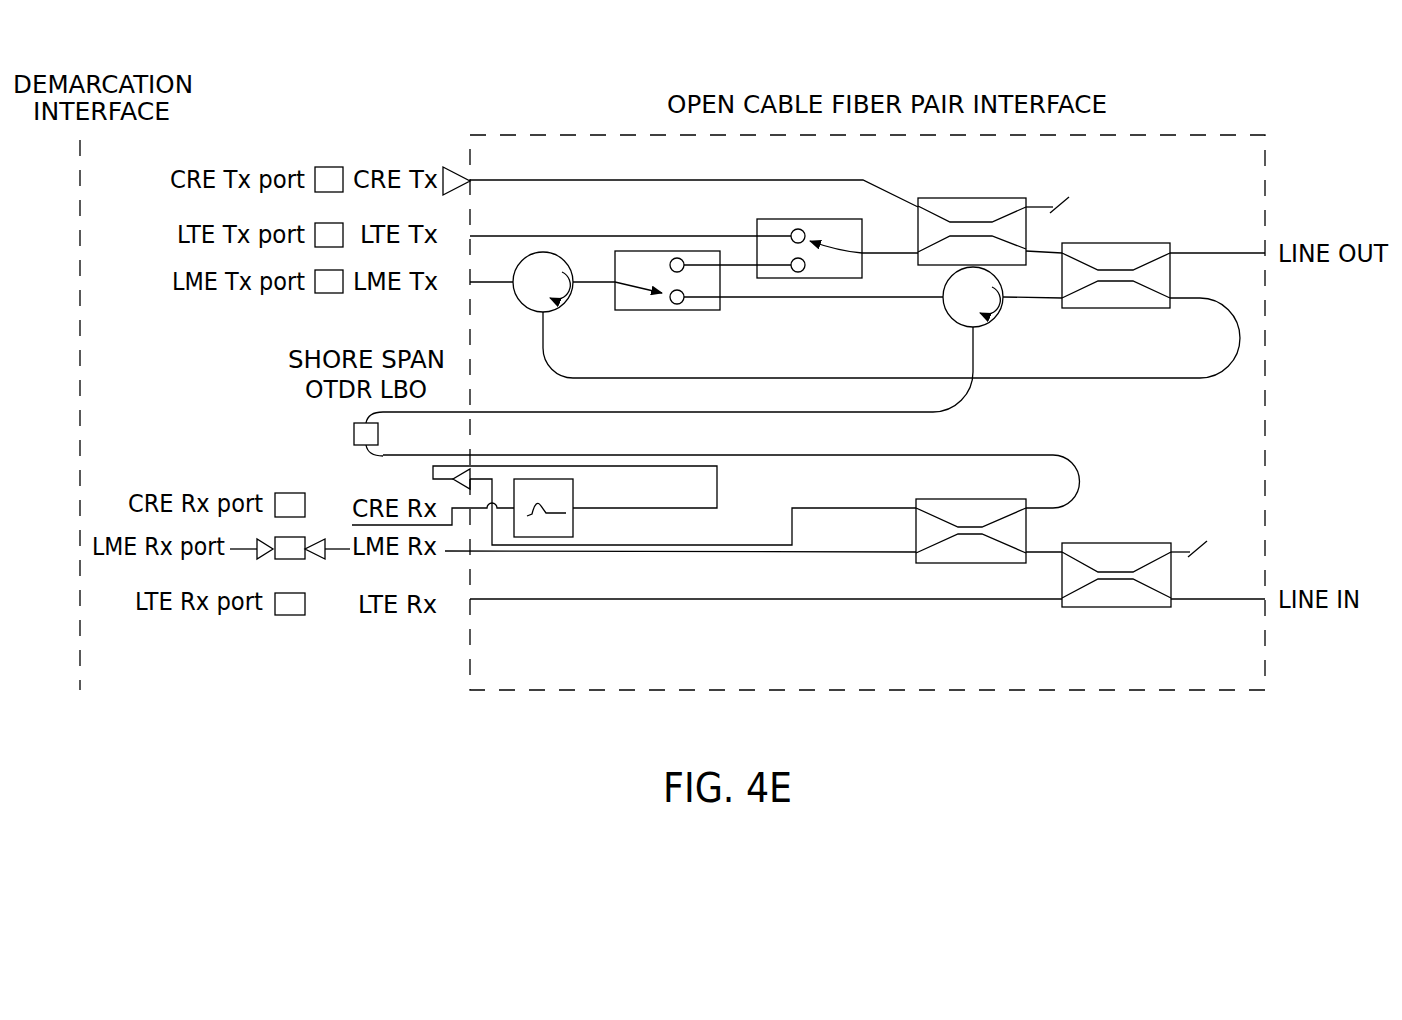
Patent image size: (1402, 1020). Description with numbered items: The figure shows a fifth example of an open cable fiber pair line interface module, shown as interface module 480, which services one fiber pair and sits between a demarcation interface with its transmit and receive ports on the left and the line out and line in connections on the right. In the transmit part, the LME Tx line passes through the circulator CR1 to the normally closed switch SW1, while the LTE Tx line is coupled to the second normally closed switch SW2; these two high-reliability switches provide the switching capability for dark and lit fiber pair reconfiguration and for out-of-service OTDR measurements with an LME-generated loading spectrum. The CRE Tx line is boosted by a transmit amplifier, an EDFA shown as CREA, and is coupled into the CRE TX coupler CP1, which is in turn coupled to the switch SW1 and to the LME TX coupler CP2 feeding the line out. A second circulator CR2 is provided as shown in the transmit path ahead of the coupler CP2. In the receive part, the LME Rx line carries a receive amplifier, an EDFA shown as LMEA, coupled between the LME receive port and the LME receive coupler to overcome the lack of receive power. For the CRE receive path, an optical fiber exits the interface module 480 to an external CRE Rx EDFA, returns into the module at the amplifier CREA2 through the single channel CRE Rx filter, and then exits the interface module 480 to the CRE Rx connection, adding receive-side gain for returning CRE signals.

The interface module 480 is at (907, 742).
The CRE TX coupler CP1 is at (972, 202).
The LME TX coupler CP2 is at (1116, 246).
The switch SW1 is at (667, 300).
The switch SW2 is at (809, 233).
The circulator CR1 is at (528, 300).
The circulator CR2 is at (945, 307).
The transmit amplifier CREA is at (431, 164).
The CRE amplifier CREA2 is at (406, 474).
The receive amplifier LMEA is at (290, 562).